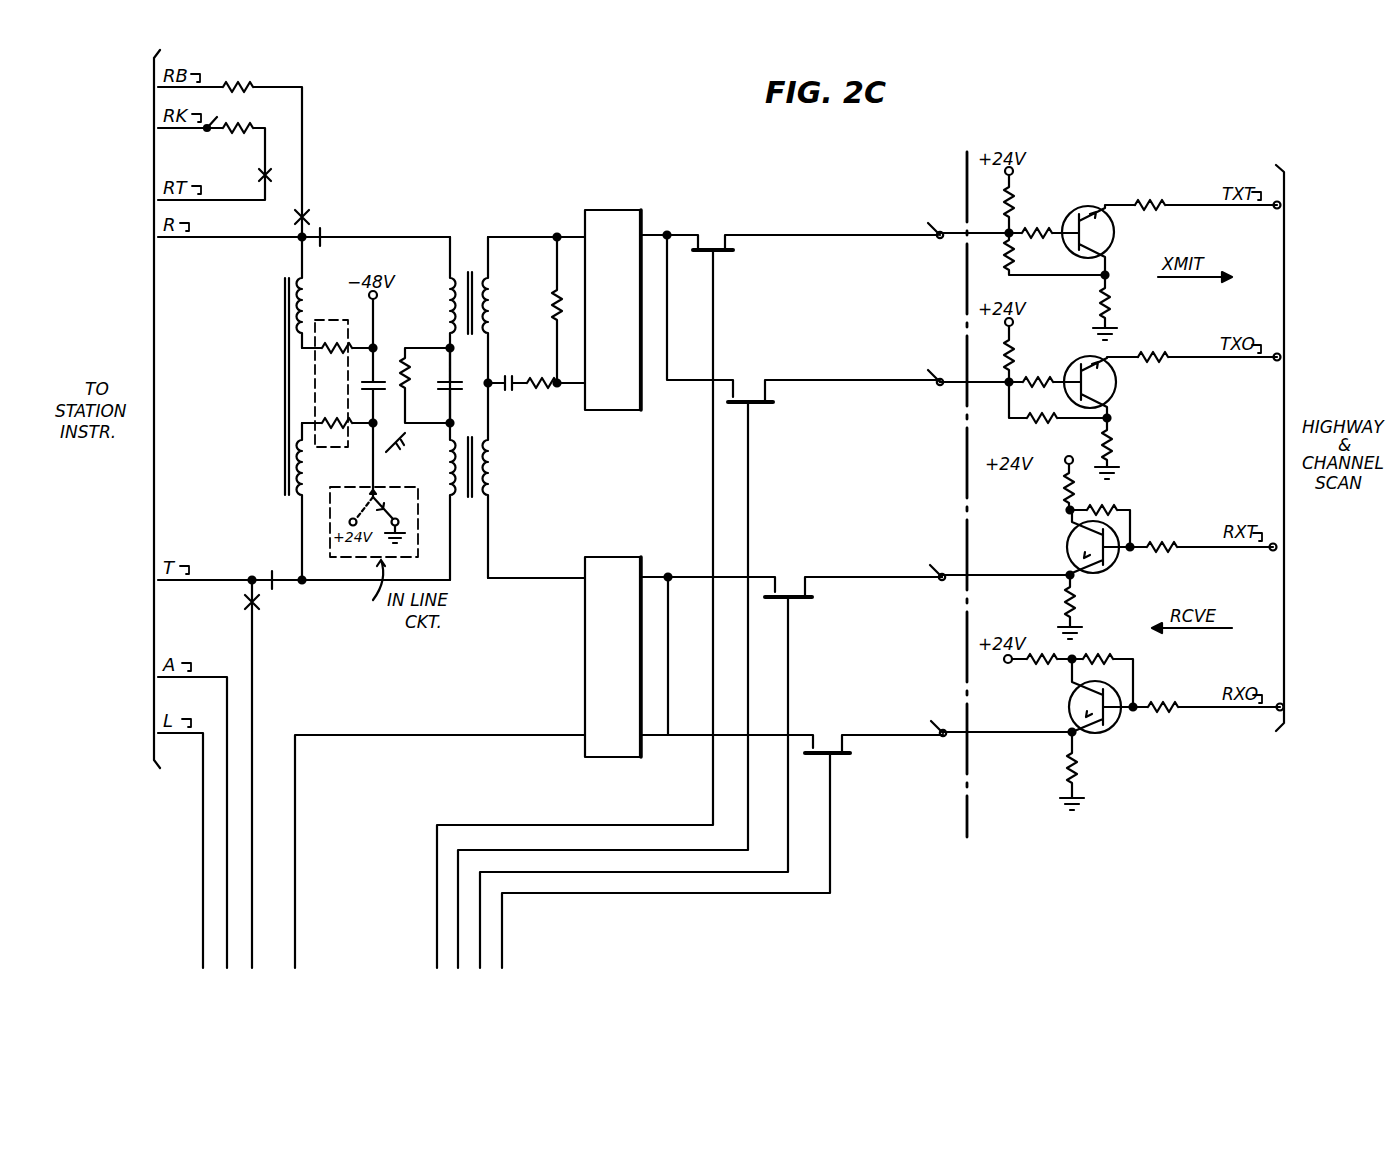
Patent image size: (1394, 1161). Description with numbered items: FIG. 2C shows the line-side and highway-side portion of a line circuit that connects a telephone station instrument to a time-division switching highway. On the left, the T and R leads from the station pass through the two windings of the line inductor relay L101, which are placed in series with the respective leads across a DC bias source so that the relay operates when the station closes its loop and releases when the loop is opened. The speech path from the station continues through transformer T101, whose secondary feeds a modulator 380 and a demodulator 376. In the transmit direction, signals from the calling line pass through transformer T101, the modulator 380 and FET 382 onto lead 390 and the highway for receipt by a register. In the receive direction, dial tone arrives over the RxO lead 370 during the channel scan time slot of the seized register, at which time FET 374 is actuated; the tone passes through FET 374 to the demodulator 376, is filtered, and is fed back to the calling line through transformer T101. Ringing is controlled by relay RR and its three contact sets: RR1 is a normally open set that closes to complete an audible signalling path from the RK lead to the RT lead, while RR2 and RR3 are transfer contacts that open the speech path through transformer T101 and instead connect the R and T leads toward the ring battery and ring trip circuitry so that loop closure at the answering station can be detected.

The RxO lead 370 is at (1196, 702).
The FET 374 is at (850, 712).
The demodulator 376 is at (625, 557).
The modulator 380 is at (632, 186).
The FET 382 is at (714, 243).
The lead 390 is at (1226, 210).
The normally open contacts of relay RR RR1 is at (262, 172).
The transfer contacts of relay RR RR2 is at (322, 233).
The transfer contacts of relay RR RR3 is at (268, 596).
The line inductor relay L101 is at (287, 394).
The transformer T101 is at (498, 208).